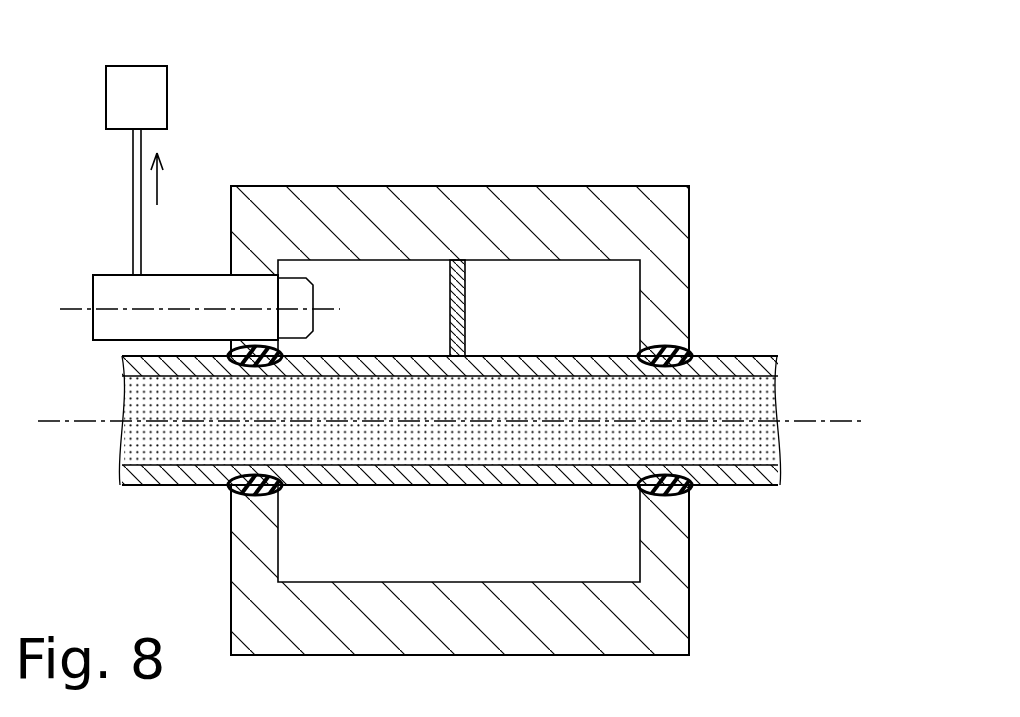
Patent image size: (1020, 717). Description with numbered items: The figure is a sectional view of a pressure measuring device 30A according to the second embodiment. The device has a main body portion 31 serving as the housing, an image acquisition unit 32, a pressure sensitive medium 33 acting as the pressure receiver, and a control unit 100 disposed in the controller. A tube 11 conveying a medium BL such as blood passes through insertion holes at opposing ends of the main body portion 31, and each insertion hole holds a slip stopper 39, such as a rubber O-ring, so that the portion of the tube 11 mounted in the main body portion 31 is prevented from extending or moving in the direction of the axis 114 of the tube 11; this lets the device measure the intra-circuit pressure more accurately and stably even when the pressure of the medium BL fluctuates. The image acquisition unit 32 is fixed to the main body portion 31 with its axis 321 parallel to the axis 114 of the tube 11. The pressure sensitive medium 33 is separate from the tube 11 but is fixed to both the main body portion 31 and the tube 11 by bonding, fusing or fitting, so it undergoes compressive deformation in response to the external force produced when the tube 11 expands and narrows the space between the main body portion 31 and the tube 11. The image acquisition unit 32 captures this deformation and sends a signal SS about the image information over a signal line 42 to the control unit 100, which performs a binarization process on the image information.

The control unit 100 is at (136, 80).
The signal line 42 is at (132, 172).
The axis of the image acquisition unit 321 is at (70, 300).
The image acquisition unit 32 is at (192, 278).
The pressure sensitive medium 33 is at (450, 300).
The main body portion 31 is at (660, 222).
The slip stopper 39 is at (255, 365).
The tube 11 is at (740, 365).
The axis of the tube 114 is at (820, 418).
The medium BL is at (750, 440).
The signal SS is at (157, 190).
The pressure measuring device 30A is at (670, 78).